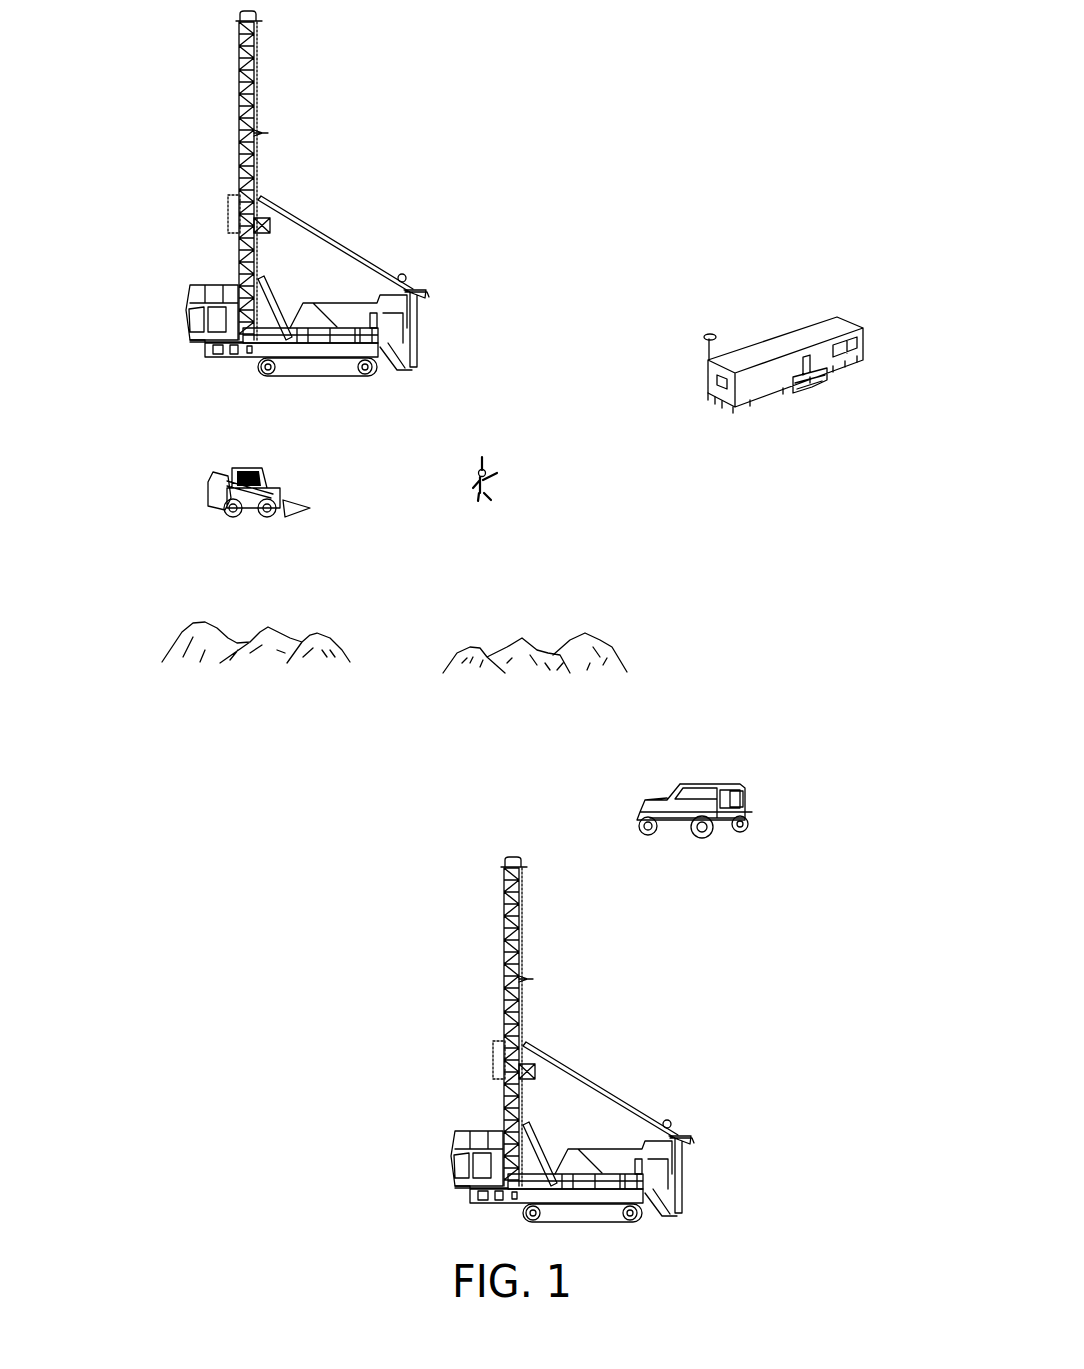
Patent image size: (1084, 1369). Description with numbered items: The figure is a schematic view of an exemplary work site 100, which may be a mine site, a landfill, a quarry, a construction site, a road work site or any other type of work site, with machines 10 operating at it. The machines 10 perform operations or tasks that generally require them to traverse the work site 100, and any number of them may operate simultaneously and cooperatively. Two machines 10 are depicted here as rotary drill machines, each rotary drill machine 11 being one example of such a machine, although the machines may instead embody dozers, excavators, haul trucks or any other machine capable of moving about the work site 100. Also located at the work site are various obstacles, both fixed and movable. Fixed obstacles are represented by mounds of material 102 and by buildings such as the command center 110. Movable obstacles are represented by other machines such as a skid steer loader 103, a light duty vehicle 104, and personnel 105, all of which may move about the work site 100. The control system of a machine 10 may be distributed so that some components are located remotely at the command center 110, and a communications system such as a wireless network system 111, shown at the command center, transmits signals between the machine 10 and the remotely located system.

The work site 100 is at (590, 112).
The machine 10 is at (461, 616).
The rotary drill machine 11 is at (418, 315).
The mounds of material 102 is at (208, 622).
The skid steer loader 103 is at (270, 493).
The light duty vehicle 104 is at (720, 783).
The personnel 105 is at (497, 472).
The command center 110 is at (737, 315).
The wireless network system 111 is at (709, 334).